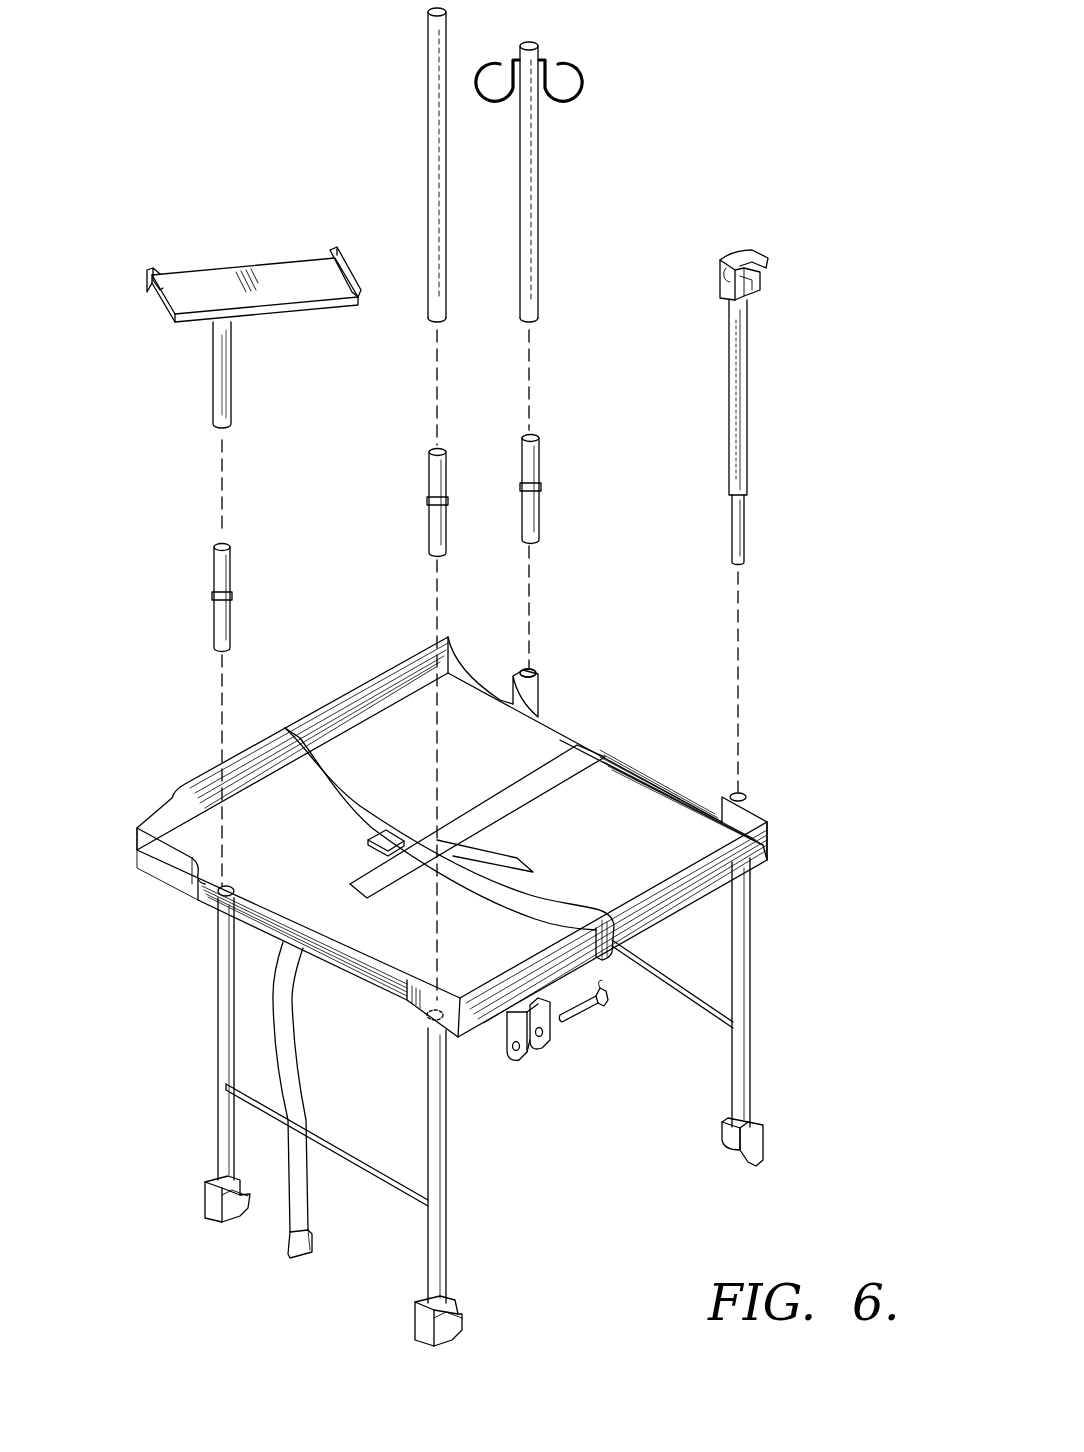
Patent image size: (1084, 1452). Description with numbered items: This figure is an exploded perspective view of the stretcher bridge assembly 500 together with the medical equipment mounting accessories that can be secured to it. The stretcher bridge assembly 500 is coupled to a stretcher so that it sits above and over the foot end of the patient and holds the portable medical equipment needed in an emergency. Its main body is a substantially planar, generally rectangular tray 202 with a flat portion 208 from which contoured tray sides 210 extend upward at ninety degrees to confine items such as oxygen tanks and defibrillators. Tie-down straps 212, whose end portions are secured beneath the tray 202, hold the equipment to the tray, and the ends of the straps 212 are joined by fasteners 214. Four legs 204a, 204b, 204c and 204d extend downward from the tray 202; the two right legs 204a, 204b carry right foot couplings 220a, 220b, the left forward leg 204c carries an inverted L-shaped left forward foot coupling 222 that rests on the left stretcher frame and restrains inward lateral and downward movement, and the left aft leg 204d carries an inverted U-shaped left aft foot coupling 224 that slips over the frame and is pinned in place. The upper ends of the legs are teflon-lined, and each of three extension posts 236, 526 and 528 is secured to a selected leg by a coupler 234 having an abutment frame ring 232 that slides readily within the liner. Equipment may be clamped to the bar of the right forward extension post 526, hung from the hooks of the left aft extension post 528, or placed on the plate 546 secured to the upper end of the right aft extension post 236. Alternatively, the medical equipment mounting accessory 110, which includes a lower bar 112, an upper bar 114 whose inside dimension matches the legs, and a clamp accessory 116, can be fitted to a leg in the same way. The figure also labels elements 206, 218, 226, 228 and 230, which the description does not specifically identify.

The medical equipment mounting accessory 110 is at (810, 386).
The lower bar 112 is at (746, 544).
The upper bar 114 is at (746, 426).
The clamp accessory 116 is at (742, 252).
The tray 202 is at (452, 855).
The leg 204a is at (222, 946).
The leg 204b is at (447, 1254).
The left forward leg 204c is at (751, 1060).
The left aft leg 204d is at (540, 678).
The cross brace 206 is at (394, 1182).
The flat portion 208 is at (625, 808).
The tray sides 210 is at (540, 704).
The tie-down straps 212 is at (377, 880).
The fasteners 214 is at (398, 838).
The rail 218 is at (338, 704).
The right foot coupling 220a is at (212, 1198).
The right foot coupling 220b is at (468, 1310).
The left forward foot coupling 222 is at (762, 1146).
The left aft foot coupling 224 is at (514, 1046).
The bracket holes 226 is at (540, 1038).
The pin 228 is at (576, 1016).
The pin head 230 is at (604, 982).
The ring 232 is at (212, 596).
The coupler 234 is at (236, 598).
The extension post 236 is at (233, 373).
The stretcher bridge assembly 500 is at (790, 922).
The extension post 526 is at (432, 94).
The extension post 528 is at (539, 182).
The plate 546 is at (232, 276).